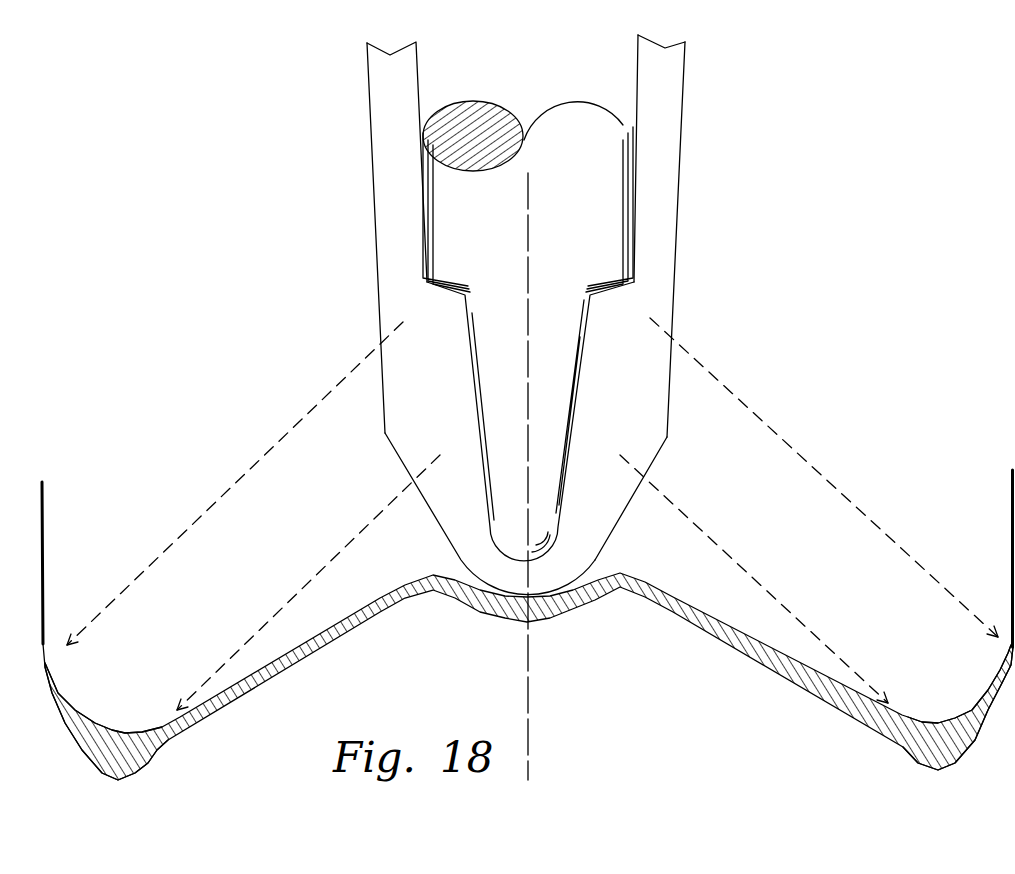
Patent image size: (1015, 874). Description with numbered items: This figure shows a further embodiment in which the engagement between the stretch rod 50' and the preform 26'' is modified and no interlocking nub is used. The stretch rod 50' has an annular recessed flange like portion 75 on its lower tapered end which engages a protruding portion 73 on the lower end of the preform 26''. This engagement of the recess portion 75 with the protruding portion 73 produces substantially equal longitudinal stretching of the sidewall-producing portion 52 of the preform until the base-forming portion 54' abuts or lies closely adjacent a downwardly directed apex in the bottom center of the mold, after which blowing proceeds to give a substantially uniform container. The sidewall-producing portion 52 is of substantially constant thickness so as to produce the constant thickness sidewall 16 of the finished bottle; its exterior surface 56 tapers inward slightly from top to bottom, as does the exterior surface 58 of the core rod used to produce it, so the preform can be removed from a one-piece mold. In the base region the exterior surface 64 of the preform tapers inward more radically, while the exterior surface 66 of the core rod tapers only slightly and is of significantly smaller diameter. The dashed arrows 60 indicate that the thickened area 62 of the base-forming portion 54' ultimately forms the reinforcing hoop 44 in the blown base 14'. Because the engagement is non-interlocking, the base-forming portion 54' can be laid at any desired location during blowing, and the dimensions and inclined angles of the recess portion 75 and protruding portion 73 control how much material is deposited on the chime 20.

The finished bottle base 14' is at (527, 677).
The sidewall 16 is at (45, 538).
The chime 20 is at (140, 772).
The preform 26'' is at (339, 237).
The reinforcing hoop 44 is at (121, 757).
The stretch rod 50' is at (521, 114).
The sidewall-producing portion 52 is at (729, 139).
The base-forming portion 54' is at (727, 448).
The exterior surface of the preform 56 is at (678, 227).
The exterior surface of the core rod 58 is at (627, 238).
The dashed arrows 60 is at (297, 590).
The thickened area 62 is at (310, 640).
The exterior surface of the preform in the base-producing portion 64 is at (658, 455).
The exterior surface of the core rod in the base area 66 is at (575, 498).
The protruding portion 73 is at (455, 297).
The annular recessed flange like portion 75 is at (452, 280).